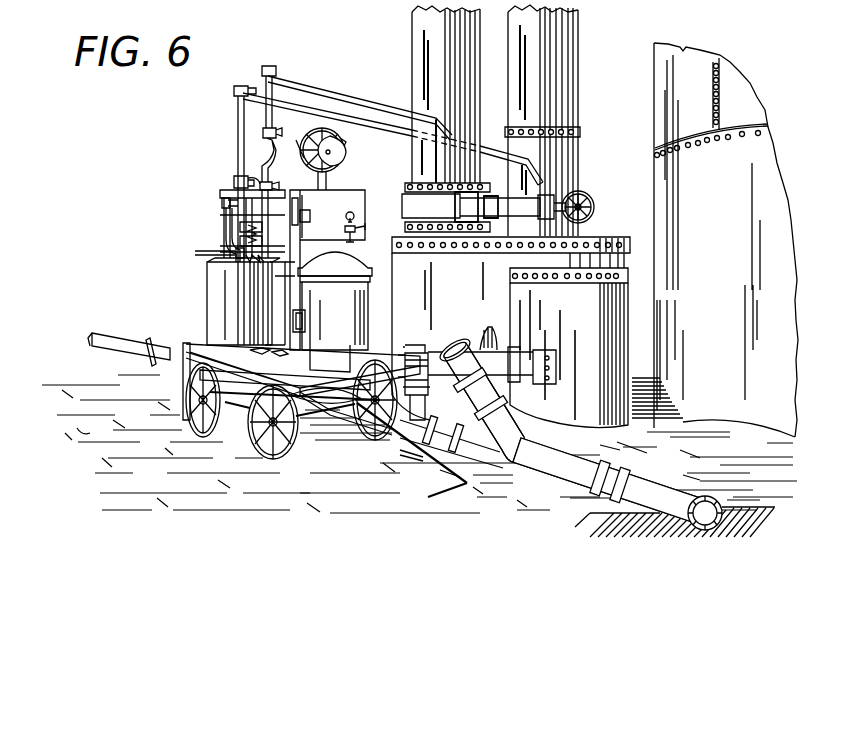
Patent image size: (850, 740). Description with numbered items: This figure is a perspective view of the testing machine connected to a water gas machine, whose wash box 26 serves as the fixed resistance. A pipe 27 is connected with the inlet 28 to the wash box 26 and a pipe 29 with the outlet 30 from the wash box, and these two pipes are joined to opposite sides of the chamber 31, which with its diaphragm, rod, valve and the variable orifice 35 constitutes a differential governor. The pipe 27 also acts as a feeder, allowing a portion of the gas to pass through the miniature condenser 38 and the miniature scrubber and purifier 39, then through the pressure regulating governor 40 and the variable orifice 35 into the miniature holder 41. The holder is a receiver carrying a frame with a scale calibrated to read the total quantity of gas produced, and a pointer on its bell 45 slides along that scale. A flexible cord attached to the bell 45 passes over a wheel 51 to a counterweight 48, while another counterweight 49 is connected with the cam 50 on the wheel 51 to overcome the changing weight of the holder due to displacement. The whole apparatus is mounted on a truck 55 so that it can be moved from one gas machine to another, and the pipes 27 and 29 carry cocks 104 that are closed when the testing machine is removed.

The wash box 26 is at (605, 236).
The pipe 27 is at (224, 205).
The inlet 28 is at (576, 60).
The pipe 29 is at (318, 87).
The outlet 30 is at (414, 47).
The chamber 31 is at (246, 180).
The variable orifice 35 is at (270, 300).
The miniature condenser 38 is at (206, 276).
The miniature scrubber and purifier 39 is at (240, 287).
The pressure regulating governor 40 is at (242, 291).
The miniature holder 41 is at (372, 302).
The bell 45 is at (360, 250).
The counterweight 48 is at (325, 313).
The counterweight 49 is at (312, 213).
The cam 50 is at (340, 142).
The wheel 51 is at (304, 146).
The truck 55 is at (182, 365).
The cocks 104 is at (262, 128).